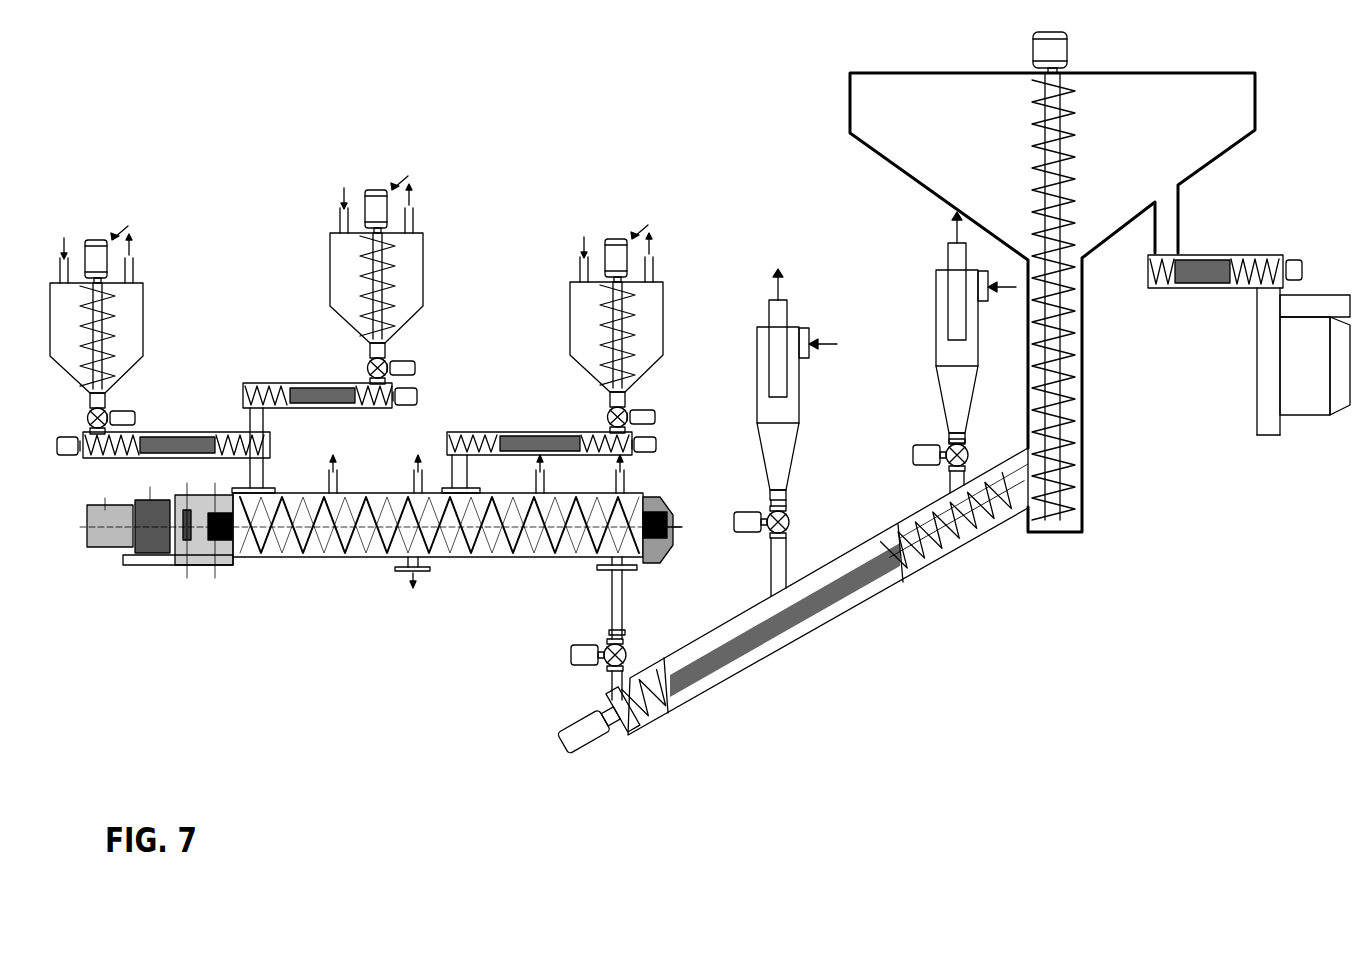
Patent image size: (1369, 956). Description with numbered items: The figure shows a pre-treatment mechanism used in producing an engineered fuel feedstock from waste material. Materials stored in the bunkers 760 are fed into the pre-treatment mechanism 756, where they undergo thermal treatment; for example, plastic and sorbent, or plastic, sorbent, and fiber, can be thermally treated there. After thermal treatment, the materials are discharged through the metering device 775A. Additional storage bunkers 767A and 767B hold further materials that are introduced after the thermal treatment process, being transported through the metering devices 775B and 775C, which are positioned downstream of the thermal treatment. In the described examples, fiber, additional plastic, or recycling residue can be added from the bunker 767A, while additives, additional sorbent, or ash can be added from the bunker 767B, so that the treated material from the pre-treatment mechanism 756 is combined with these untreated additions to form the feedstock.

The bunkers 760 is at (233, 180).
The pre-treatment mechanism 756 is at (368, 589).
The storage bunker 767A is at (748, 412).
The storage bunker 767B is at (928, 316).
The metering device 775A is at (568, 635).
The metering device 775B is at (790, 548).
The metering device 775C is at (913, 463).